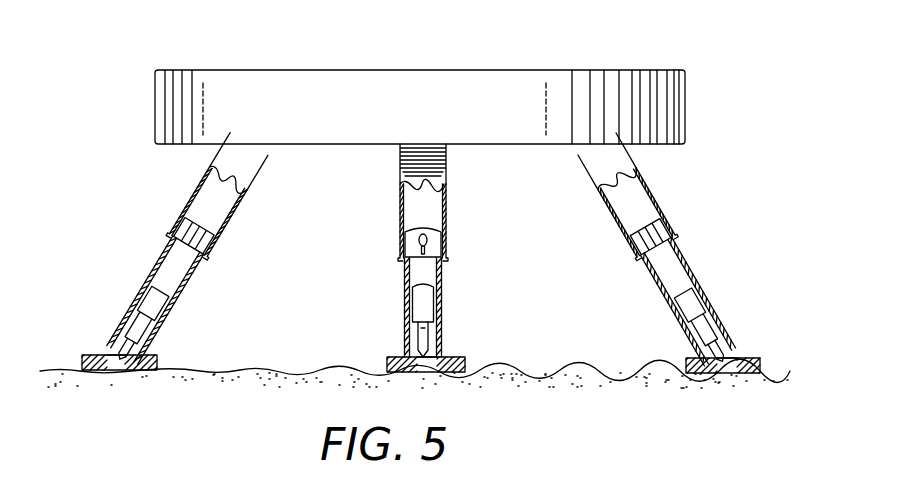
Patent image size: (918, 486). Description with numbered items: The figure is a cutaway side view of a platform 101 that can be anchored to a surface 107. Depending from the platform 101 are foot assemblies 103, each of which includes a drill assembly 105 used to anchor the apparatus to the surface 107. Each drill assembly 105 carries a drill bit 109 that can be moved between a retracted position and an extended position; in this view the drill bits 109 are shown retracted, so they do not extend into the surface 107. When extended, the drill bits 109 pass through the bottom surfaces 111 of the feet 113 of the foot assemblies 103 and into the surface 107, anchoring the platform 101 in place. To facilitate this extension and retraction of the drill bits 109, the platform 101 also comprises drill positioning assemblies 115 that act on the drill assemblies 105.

The platform 101 is at (687, 59).
The foot assembly 103 is at (402, 198).
The drill assembly 105 is at (157, 270).
The surface 107 is at (557, 432).
The drill bit 109 is at (122, 342).
The bottom surface 111 is at (137, 372).
The foot 113 is at (150, 357).
The drill positioning assembly 115 is at (190, 188).